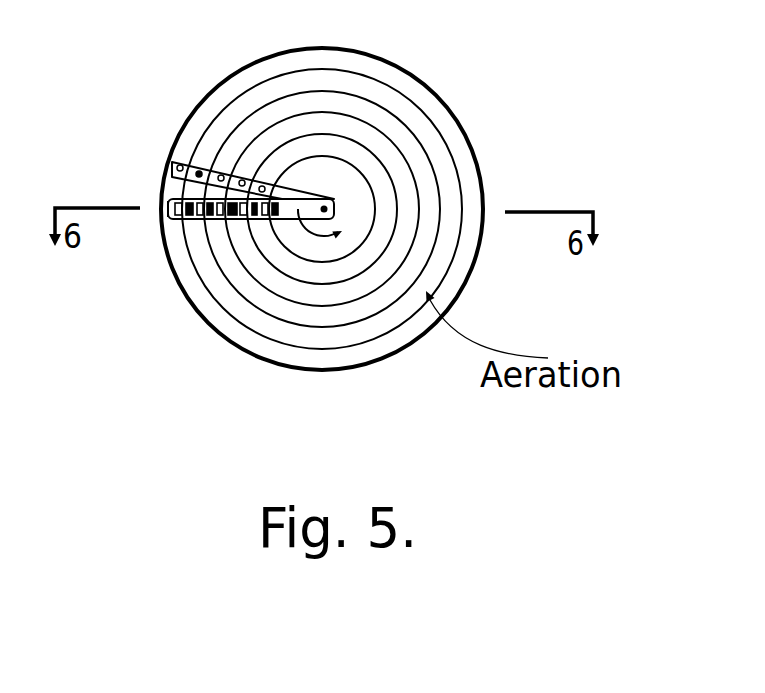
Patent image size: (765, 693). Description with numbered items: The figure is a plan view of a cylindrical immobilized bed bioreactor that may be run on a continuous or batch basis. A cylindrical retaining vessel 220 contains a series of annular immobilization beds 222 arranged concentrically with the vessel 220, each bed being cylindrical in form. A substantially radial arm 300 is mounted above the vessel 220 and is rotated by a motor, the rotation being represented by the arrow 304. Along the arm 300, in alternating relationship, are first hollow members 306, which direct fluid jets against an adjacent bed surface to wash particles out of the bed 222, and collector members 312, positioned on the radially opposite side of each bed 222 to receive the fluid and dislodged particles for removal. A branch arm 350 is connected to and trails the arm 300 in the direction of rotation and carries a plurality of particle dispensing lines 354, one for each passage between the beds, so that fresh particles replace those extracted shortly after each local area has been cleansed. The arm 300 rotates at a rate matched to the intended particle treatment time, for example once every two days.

The cylindrical retaining vessel 220 is at (482, 162).
The annular immobilization beds 222 is at (417, 107).
The radial arm 300 is at (287, 219).
The arrow representing rotation 304 is at (315, 237).
The first hollow member 306 is at (191, 221).
The second hollow member (collector member) 312 is at (166, 203).
The branch arm 350 is at (252, 177).
The particle dispensing lines 354 is at (242, 183).